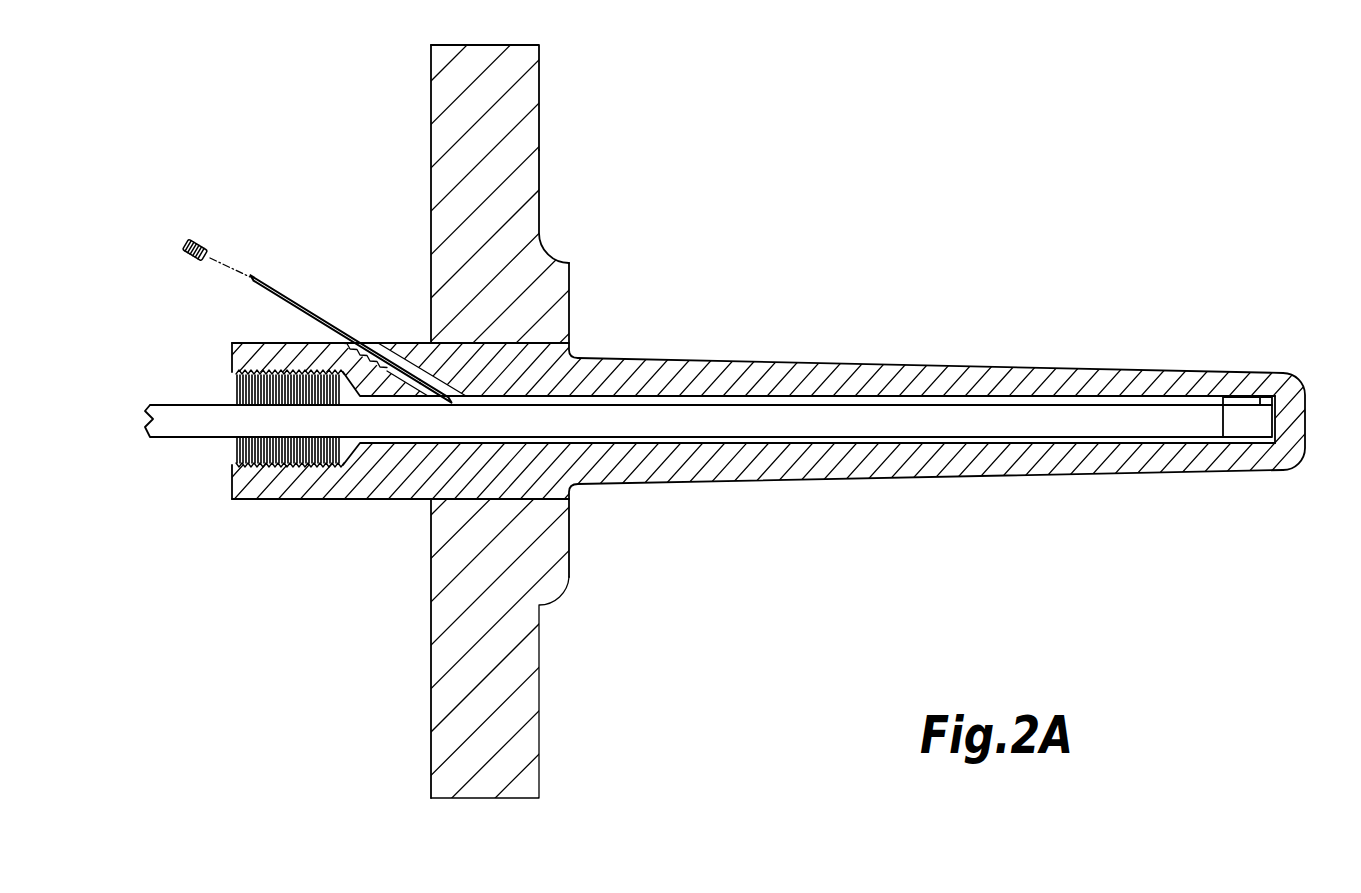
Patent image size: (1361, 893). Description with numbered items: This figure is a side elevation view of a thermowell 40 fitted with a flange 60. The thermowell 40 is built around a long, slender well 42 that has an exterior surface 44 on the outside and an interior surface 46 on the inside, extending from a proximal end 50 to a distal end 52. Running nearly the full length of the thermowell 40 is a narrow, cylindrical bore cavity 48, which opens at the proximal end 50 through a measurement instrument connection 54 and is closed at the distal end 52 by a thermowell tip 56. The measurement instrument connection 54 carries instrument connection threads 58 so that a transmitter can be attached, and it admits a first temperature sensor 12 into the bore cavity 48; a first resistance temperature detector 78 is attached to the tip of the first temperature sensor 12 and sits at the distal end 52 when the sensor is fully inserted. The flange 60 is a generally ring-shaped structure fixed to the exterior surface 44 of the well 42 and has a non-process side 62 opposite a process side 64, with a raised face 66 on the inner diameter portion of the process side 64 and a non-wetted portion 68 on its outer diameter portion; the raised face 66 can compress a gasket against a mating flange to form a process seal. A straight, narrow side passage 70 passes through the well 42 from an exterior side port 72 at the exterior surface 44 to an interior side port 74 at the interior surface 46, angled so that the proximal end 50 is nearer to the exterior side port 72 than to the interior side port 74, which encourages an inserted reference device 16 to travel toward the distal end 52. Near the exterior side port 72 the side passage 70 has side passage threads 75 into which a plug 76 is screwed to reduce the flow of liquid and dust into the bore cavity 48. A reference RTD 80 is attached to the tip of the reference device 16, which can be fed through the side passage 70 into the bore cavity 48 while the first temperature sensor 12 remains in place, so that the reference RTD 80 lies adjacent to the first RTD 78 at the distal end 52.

The first temperature sensor 12 is at (188, 452).
The reference device 16 is at (293, 281).
The thermowell 40 is at (928, 226).
The well 42 is at (878, 352).
The exterior surface 44 is at (783, 362).
The interior surface 46 is at (727, 395).
The bore cavity 48 is at (818, 443).
The proximal end 50 is at (230, 488).
The distal end 52 is at (1306, 408).
The measurement instrument connection 54 is at (232, 393).
The thermowell tip 56 is at (1283, 427).
The instrument connection threads 58 is at (290, 467).
The flange 60 is at (496, 38).
The non-process side 62 is at (430, 105).
The process side 64 is at (553, 195).
The raised face 66 is at (570, 285).
The non-wetted portion 68 is at (538, 123).
The side passage 70 is at (345, 378).
The exterior side port 72 is at (375, 342).
The interior side port 74 is at (423, 392).
The side passage threads 75 is at (368, 369).
The plug 76 is at (194, 240).
The first resistance temperature detector 78 is at (1253, 425).
The reference RTD 80 is at (1237, 402).